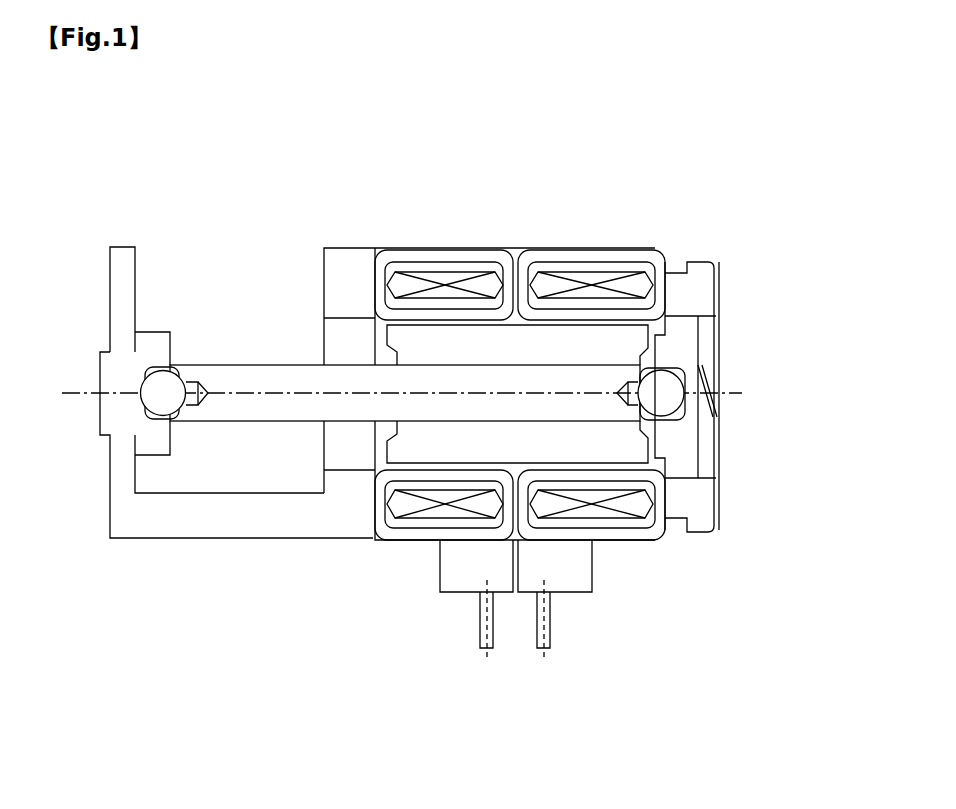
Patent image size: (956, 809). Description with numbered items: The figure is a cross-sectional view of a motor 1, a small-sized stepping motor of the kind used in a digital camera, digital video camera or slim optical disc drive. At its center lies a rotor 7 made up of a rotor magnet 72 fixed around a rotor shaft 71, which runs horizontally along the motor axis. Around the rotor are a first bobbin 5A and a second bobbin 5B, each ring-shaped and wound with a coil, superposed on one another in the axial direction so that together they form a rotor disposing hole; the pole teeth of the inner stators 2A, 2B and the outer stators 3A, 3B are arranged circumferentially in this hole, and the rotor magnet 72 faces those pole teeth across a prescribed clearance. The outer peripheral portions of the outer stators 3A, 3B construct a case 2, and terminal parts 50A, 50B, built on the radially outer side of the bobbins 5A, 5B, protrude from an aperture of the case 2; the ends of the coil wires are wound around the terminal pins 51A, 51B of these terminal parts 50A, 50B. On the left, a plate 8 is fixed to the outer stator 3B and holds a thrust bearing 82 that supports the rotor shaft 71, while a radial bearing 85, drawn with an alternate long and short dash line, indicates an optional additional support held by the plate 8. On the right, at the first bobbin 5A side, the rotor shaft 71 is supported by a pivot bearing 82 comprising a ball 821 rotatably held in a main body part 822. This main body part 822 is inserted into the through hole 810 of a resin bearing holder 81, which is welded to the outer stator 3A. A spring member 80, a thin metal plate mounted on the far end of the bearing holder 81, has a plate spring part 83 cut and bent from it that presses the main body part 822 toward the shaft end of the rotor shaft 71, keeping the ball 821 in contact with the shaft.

The motor 1 is at (300, 205).
The case 2 is at (663, 230).
The inner stator 2A is at (540, 543).
The inner stator 2B is at (493, 550).
The outer stator 3A is at (667, 542).
The outer stator 3B is at (373, 522).
The first bobbin 5A is at (607, 525).
The second bobbin 5B is at (410, 543).
The rotor 7 is at (409, 360).
The rotor shaft 71 is at (345, 385).
The rotor magnet 72 is at (415, 343).
The plate 8 is at (188, 522).
The spring member 80 is at (718, 282).
The bearing holder 81 is at (577, 409).
The through hole 810 is at (683, 480).
The pivot bearing 82 is at (454, 411).
The ball 821 is at (675, 405).
The main body part 822 is at (690, 450).
The plate spring part 83 is at (718, 375).
The radial bearing 85 is at (332, 438).
The terminal part 50A is at (572, 587).
The terminal part 50B is at (463, 585).
The terminal pin 51A is at (552, 645).
The terminal pin 51B is at (478, 650).